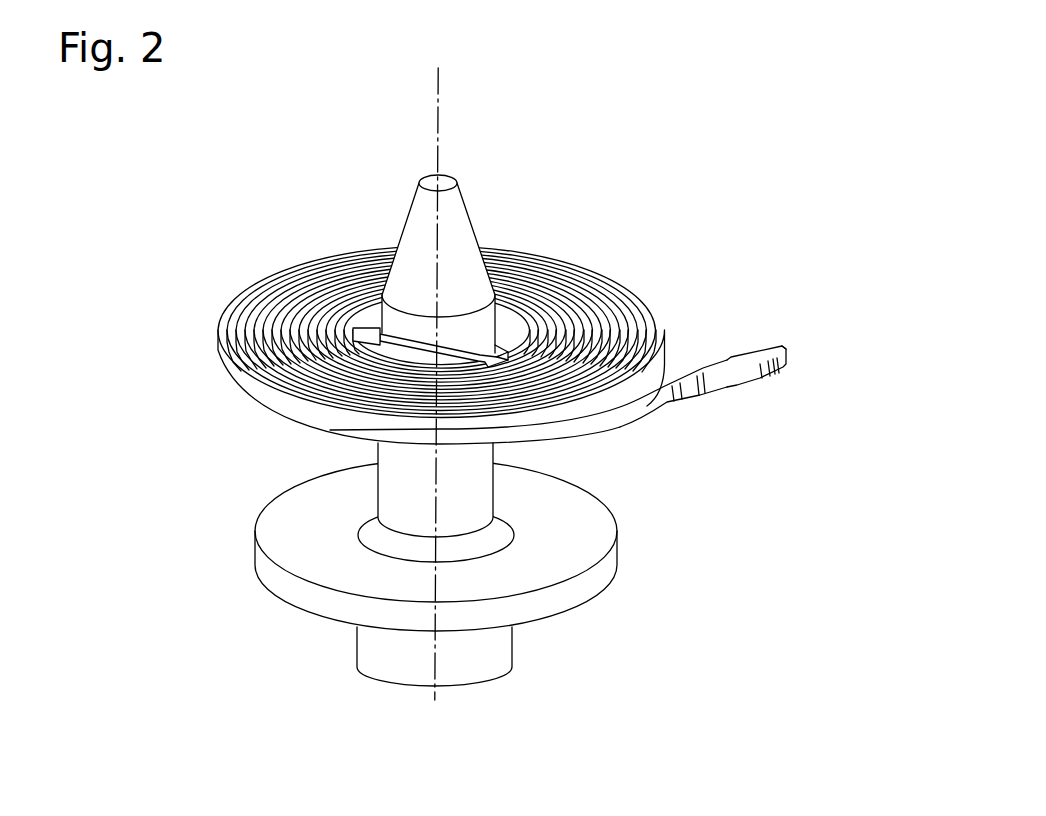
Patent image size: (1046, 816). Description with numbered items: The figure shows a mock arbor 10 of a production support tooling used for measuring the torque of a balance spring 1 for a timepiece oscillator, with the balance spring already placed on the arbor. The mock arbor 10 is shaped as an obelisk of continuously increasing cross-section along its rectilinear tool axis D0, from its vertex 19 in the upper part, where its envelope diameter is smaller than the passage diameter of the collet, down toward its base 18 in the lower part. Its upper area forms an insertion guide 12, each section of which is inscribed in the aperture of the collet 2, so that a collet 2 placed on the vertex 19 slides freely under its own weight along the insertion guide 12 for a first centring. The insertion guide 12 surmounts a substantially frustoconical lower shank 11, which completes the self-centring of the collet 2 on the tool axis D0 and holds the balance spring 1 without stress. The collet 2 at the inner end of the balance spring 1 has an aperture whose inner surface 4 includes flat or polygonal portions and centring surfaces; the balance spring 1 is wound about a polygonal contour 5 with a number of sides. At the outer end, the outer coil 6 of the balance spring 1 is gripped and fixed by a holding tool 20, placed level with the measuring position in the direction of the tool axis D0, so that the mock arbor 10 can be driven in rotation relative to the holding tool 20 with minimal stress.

The balance spring 1 is at (365, 307).
The collet 2 is at (353, 327).
The inner surface 4 is at (371, 339).
The polygonal contour 5 is at (547, 332).
The outer coil 6 is at (640, 412).
The mock arbor 10 is at (572, 590).
The lower shank 11 is at (371, 490).
The insertion guide 12 is at (477, 230).
The base 18 is at (520, 537).
The vertex 19 is at (453, 181).
The holding tool 20 is at (741, 384).
The tool axis D0 is at (446, 99).